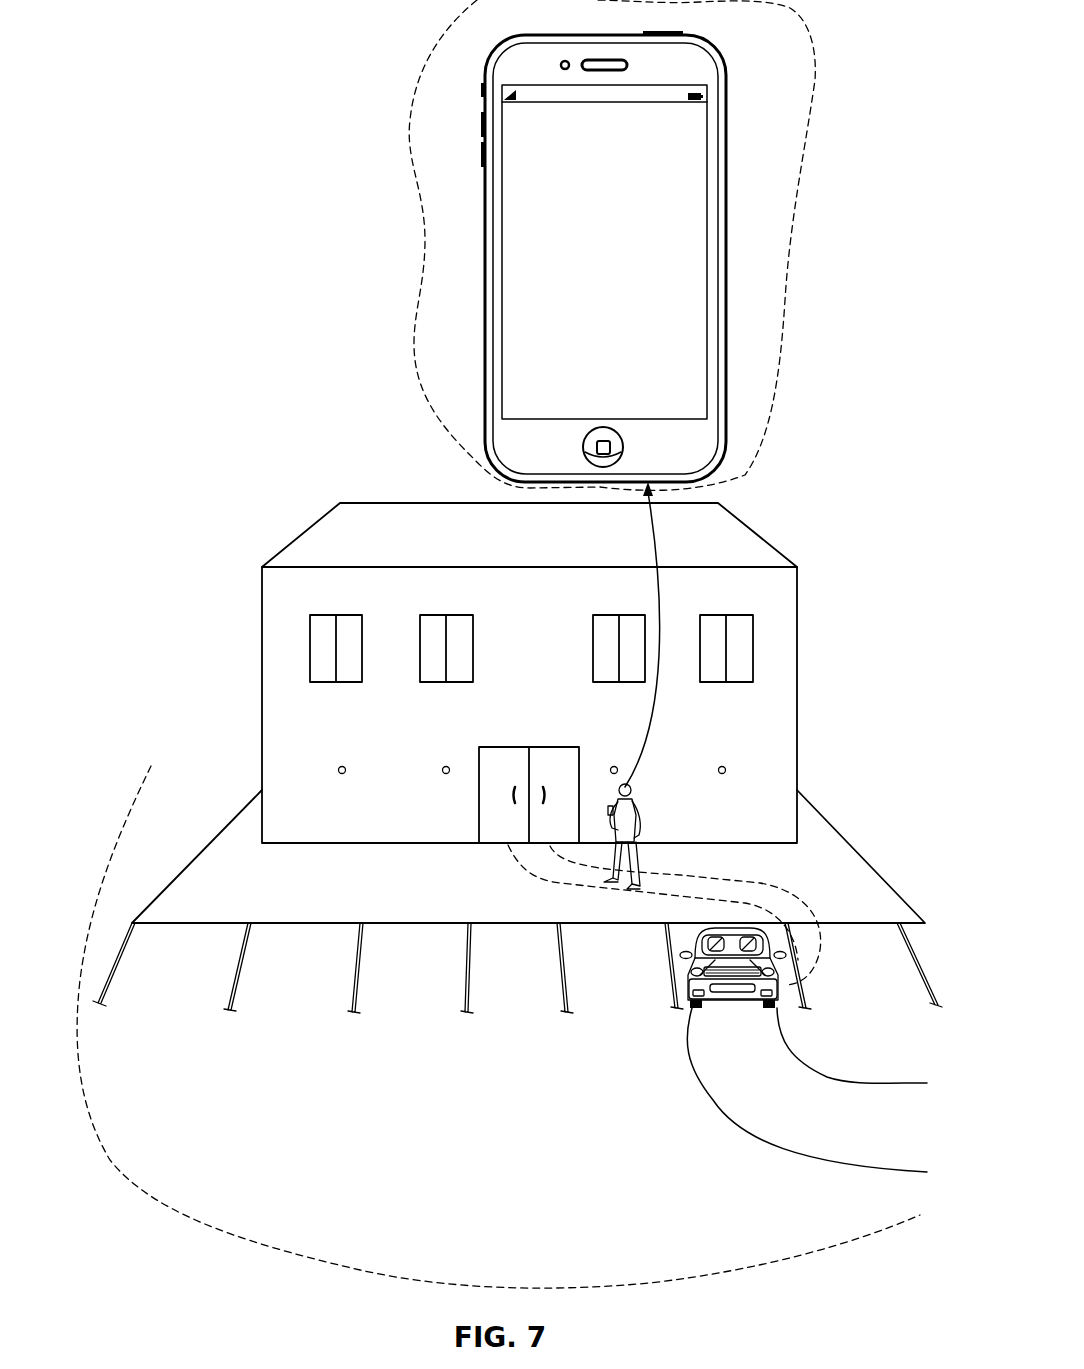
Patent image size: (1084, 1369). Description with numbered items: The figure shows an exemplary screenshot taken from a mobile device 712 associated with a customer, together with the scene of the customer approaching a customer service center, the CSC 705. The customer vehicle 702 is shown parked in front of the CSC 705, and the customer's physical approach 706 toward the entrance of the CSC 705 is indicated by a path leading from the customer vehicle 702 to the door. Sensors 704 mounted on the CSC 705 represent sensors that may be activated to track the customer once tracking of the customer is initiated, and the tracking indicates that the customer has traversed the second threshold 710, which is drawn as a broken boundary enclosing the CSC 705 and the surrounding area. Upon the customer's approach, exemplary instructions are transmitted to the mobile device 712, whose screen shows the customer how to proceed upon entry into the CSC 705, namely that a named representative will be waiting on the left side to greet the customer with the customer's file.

The customer vehicle 702 is at (731, 1015).
The sensors 704 is at (341, 758).
The CSC 705 is at (797, 678).
The customer's physical approach 706 is at (767, 880).
The second threshold 710 is at (237, 1232).
The mobile device 712 is at (558, 34).